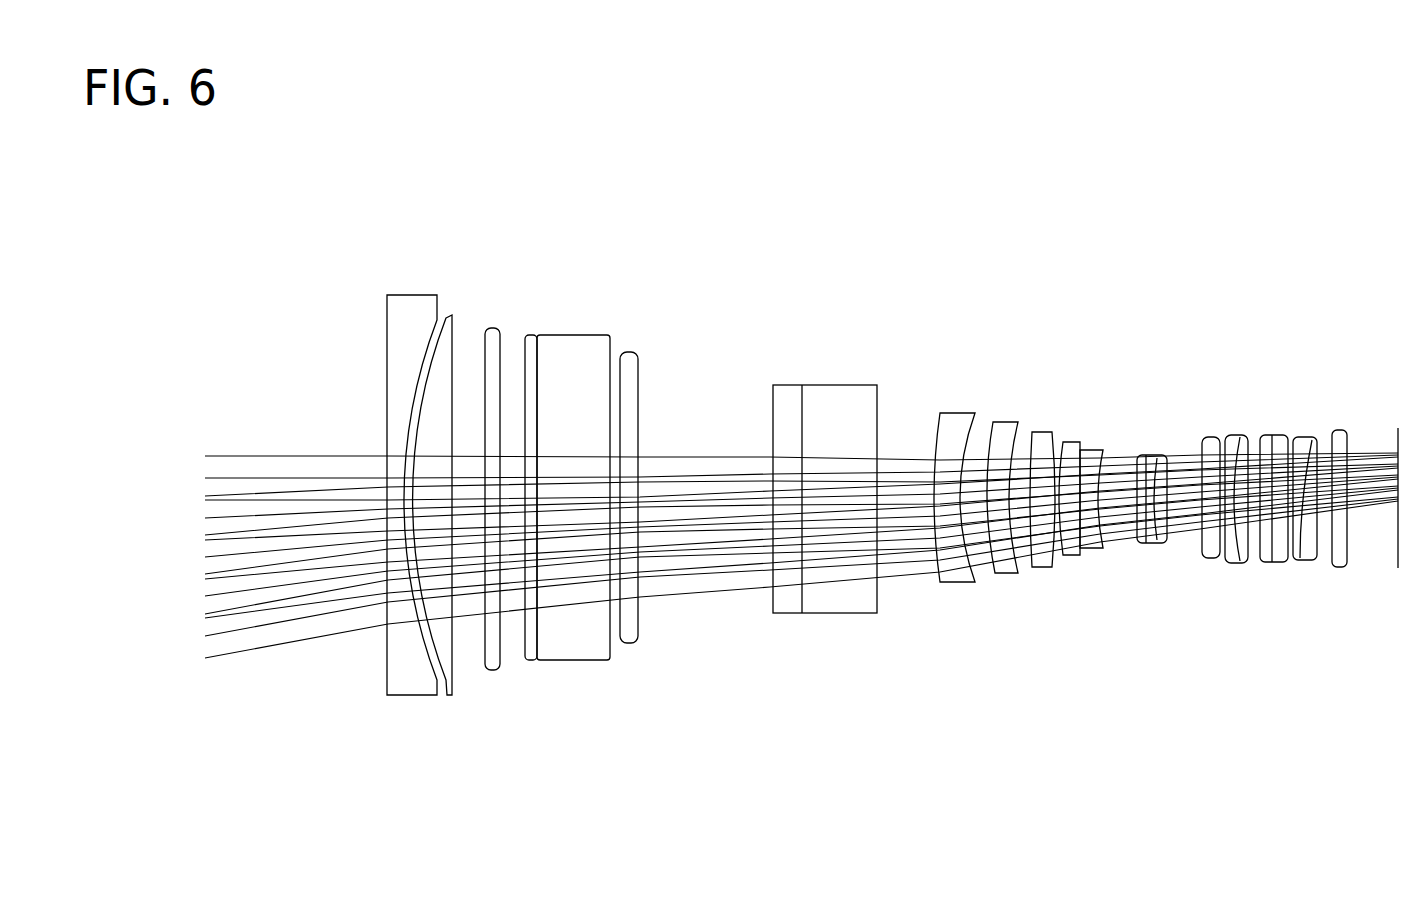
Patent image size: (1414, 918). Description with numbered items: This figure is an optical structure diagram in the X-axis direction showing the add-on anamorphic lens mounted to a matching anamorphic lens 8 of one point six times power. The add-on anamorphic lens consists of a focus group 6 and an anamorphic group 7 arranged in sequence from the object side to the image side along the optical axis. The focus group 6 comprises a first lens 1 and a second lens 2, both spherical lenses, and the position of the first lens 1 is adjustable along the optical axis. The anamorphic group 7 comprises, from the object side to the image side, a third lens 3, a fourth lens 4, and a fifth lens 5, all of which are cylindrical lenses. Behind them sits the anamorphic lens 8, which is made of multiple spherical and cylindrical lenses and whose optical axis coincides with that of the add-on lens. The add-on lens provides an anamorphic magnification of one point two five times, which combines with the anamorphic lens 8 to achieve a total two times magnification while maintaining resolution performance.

The first lens 1 is at (397, 695).
The second lens 2 is at (448, 690).
The third lens 3 is at (492, 672).
The fourth lens 4 is at (533, 661).
The fifth lens 5 is at (572, 661).
The focus group 6 is at (427, 576).
The anamorphic group 7 is at (547, 588).
The anamorphic lens 8 is at (632, 652).